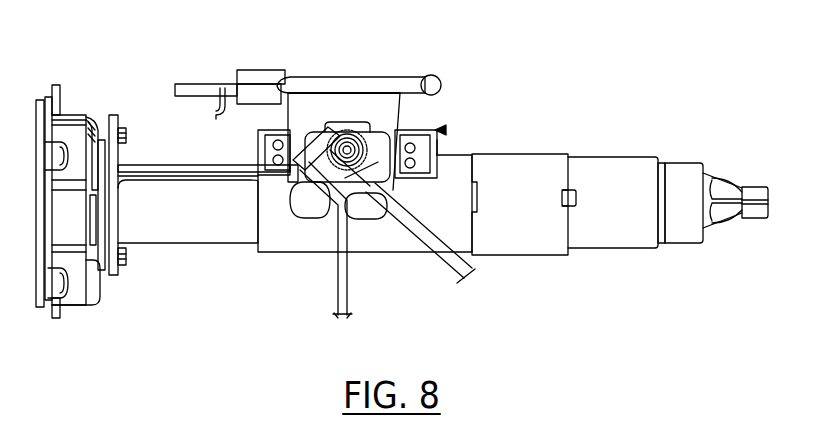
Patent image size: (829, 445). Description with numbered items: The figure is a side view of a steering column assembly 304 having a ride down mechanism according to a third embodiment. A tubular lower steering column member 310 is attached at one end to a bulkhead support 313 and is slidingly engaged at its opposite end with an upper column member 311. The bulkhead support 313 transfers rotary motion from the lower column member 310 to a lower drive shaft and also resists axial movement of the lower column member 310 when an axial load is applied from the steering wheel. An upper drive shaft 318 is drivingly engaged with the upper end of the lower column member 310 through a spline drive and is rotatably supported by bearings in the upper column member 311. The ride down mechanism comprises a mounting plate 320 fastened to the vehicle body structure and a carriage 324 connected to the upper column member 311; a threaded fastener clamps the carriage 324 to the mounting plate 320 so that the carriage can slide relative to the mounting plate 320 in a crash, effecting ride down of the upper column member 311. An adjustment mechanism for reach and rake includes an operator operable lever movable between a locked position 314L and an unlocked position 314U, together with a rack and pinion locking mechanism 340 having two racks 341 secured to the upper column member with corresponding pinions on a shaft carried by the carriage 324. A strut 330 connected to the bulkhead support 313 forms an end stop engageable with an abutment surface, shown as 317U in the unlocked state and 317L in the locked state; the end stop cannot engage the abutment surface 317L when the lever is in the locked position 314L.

The steering column assembly 304 is at (513, 60).
The lower steering column member 310 is at (197, 165).
The upper column member 311 is at (627, 249).
The bulkhead support 313 is at (88, 310).
The adjustment lever in unlocked position 314U is at (337, 284).
The adjustment lever in locked position 314L is at (445, 265).
The abutment surface in unlocked state 317U is at (288, 185).
The abutment surface in locked state 317L is at (302, 206).
The upper drive shaft 318 is at (725, 185).
The mounting plate 320 is at (327, 78).
The carriage 324 is at (436, 107).
The strut 330 is at (180, 178).
The rack and pinion locking mechanism 340 is at (440, 127).
The racks 341 is at (442, 152).